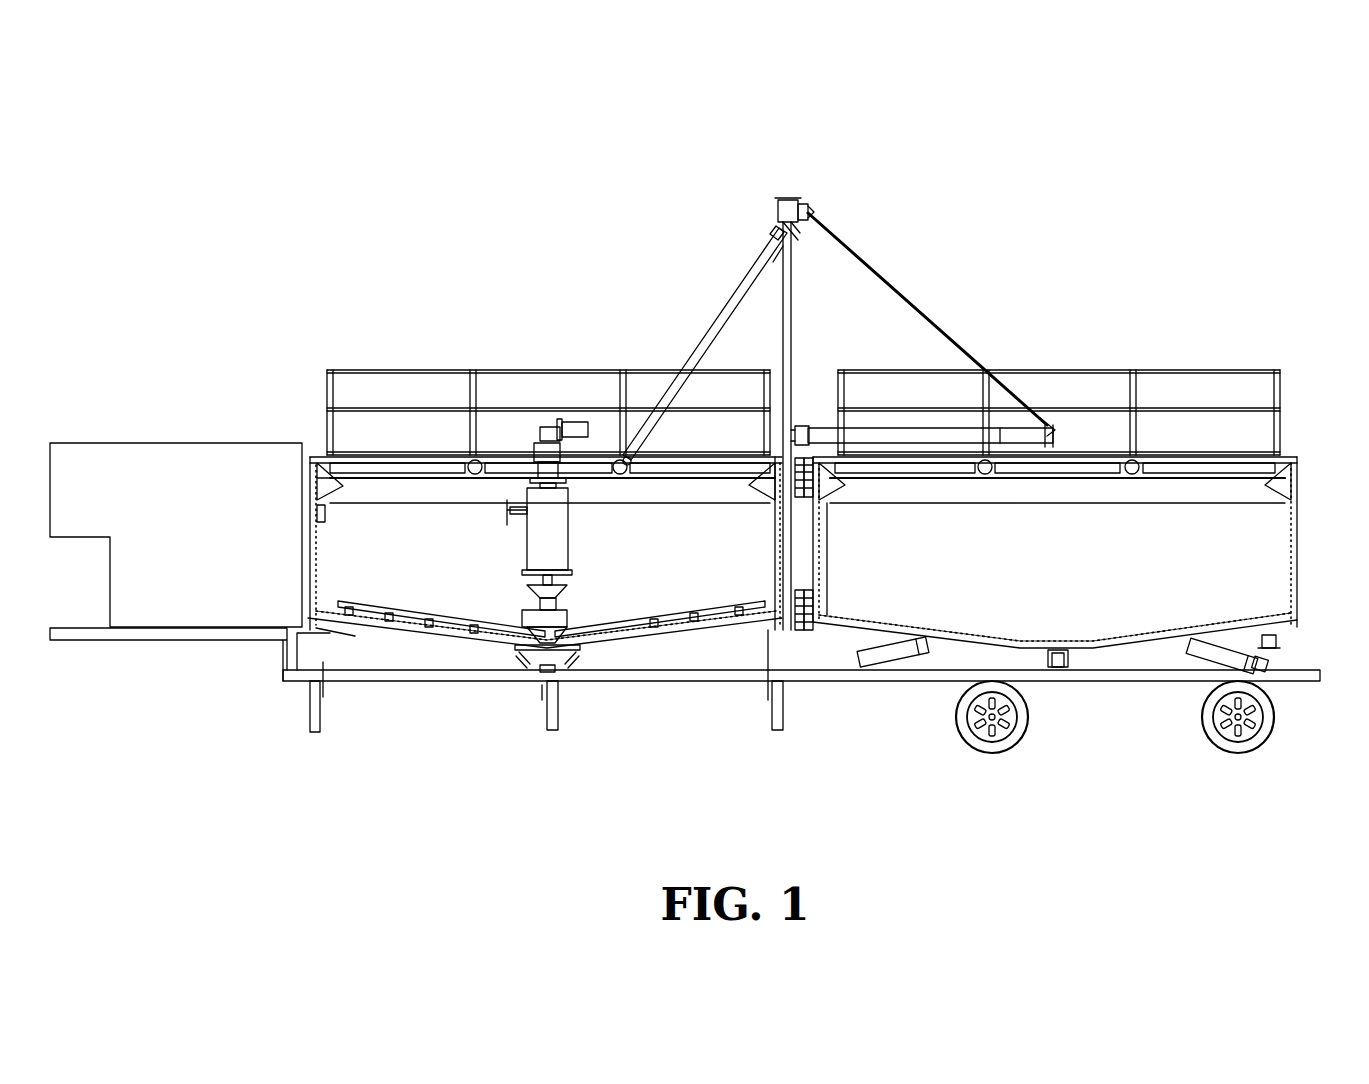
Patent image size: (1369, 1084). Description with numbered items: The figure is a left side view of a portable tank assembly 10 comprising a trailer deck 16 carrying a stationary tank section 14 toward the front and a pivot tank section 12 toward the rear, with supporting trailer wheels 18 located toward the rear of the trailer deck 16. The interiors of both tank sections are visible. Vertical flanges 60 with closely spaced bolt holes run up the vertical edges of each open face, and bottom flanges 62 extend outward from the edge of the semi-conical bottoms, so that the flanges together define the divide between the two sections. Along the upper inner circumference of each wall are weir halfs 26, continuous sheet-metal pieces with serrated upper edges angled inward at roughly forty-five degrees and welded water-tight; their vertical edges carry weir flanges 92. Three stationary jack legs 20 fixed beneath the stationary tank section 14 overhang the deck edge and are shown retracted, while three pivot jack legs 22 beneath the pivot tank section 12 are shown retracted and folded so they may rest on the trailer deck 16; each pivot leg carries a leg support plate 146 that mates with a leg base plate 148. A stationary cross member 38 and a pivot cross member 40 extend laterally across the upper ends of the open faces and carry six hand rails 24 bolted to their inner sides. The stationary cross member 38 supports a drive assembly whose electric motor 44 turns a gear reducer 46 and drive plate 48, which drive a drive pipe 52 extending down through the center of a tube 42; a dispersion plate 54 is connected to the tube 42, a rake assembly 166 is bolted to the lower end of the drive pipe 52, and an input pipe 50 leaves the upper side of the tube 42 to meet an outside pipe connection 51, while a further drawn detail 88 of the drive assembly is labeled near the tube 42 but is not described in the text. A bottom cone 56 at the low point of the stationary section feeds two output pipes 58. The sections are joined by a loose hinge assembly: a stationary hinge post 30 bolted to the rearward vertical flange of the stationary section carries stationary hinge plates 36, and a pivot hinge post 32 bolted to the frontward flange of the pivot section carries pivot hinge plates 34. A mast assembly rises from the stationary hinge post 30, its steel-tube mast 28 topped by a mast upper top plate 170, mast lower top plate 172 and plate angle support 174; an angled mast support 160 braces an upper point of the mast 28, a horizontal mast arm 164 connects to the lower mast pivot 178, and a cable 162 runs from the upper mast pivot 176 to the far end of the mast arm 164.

The portable tank assembly 10 is at (303, 254).
The pivot tank section 12 is at (1310, 492).
The stationary tank section 14 is at (311, 434).
The trailer deck 16 is at (136, 641).
The trailer wheels 18 is at (1274, 742).
The stationary jack legs 20 is at (313, 712).
The pivot jack legs 22 is at (893, 664).
The hand rails 24 is at (1160, 369).
The weir halfs 26 is at (405, 504).
The mast 28 is at (772, 272).
The stationary hinge post 30 is at (788, 537).
The pivot hinge post 32 is at (808, 568).
The pivot hinge plates 34 is at (812, 460).
The stationary hinge plates 36 is at (799, 458).
The stationary cross member 38 is at (372, 458).
The pivot cross member 40 is at (1226, 460).
The tube 42 is at (569, 548).
The electric motor 44 is at (591, 432).
The gear reducer 46 is at (539, 437).
The drive plate 48 is at (571, 478).
The input pipe 50 is at (505, 512).
The outside pipe connection 51 is at (326, 520).
The drive pipe 52 is at (522, 576).
The dispersion plate 54 is at (540, 600).
The bottom cone 56 is at (578, 662).
The output pipes 58 is at (560, 662).
The vertical flanges 60 is at (309, 531).
The bottom flanges 62 is at (345, 640).
The flange 88 is at (532, 480).
The weir flanges 92 is at (316, 480).
The leg support plate 146 is at (1268, 661).
The leg base plates 148 is at (1278, 641).
The mast support 160 is at (699, 346).
The cable 162 is at (889, 283).
The mast arm 164 is at (963, 427).
The rake assembly 166 is at (345, 603).
The mast upper top plate 170 is at (790, 197).
The mast lower top plate 172 is at (776, 228).
The plate angle support 174 is at (793, 237).
The upper mast pivot 176 is at (808, 212).
The lower mast pivot 178 is at (812, 426).